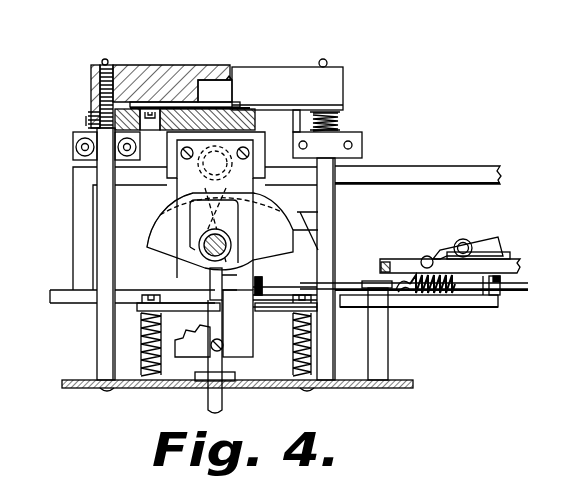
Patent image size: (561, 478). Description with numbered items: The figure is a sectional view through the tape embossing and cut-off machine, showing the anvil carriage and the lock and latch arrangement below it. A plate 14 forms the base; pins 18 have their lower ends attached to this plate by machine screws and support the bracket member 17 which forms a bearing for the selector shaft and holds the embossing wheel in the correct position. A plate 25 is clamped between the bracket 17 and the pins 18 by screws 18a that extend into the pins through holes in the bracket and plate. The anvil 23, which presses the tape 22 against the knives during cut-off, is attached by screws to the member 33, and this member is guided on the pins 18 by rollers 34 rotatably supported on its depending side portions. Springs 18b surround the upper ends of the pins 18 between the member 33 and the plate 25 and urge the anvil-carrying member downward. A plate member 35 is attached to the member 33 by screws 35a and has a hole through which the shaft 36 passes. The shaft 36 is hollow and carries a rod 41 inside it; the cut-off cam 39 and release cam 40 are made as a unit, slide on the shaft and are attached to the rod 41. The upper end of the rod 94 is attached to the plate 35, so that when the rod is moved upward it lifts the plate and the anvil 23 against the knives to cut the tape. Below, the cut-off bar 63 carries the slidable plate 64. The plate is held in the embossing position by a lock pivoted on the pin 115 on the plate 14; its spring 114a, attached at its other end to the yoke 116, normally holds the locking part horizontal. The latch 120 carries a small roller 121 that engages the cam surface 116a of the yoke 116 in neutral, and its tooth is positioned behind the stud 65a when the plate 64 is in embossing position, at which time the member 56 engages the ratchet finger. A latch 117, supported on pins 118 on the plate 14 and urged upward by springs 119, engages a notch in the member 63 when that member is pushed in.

The plate 14 is at (380, 385).
The bracket member 17 is at (345, 82).
The pins 18 is at (105, 201).
The screws 18a is at (107, 60).
The springs 18b is at (92, 120).
The tape 22 is at (233, 92).
The anvil 23 is at (146, 100).
The plate 25 is at (340, 113).
The member 33 is at (363, 143).
The rollers 34 is at (74, 146).
The plate member 35 is at (178, 186).
The screws 35a is at (203, 100).
The shaft 36 is at (172, 236).
The cut-off cam 39 is at (150, 240).
The release cam 40 is at (268, 218).
The rod 41 is at (208, 260).
The member 56 is at (290, 332).
The cut-off bar 63 is at (452, 308).
The plate 64 is at (348, 283).
The stud 65a is at (488, 279).
The rod 94 is at (226, 402).
The spring 114a is at (452, 290).
The pin 115 is at (389, 346).
The yoke 116 is at (403, 259).
The cam surface 116a is at (504, 254).
The latch 117 is at (173, 325).
The pins 118 is at (138, 303).
The springs 119 is at (143, 357).
The latch 120 is at (484, 243).
The roller 121 is at (464, 240).